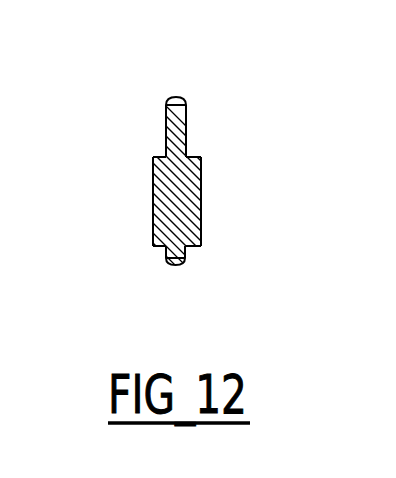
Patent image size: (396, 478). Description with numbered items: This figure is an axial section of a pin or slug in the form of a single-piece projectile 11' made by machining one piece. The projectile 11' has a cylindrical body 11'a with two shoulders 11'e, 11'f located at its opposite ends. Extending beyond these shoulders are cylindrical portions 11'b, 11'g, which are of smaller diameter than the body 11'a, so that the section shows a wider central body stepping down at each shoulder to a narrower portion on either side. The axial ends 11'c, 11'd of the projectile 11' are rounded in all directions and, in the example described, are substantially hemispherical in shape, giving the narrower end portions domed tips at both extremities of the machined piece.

The projectile 11' is at (142, 180).
The cylindrical body 11'a is at (119, 201).
The cylindrical portion 11'b is at (138, 78).
The axial end 11'c is at (220, 55).
The axial end 11'd is at (230, 284).
The shoulder 11'e is at (226, 121).
The shoulder 11'f is at (115, 282).
The cylindrical portion 11'g is at (249, 231).